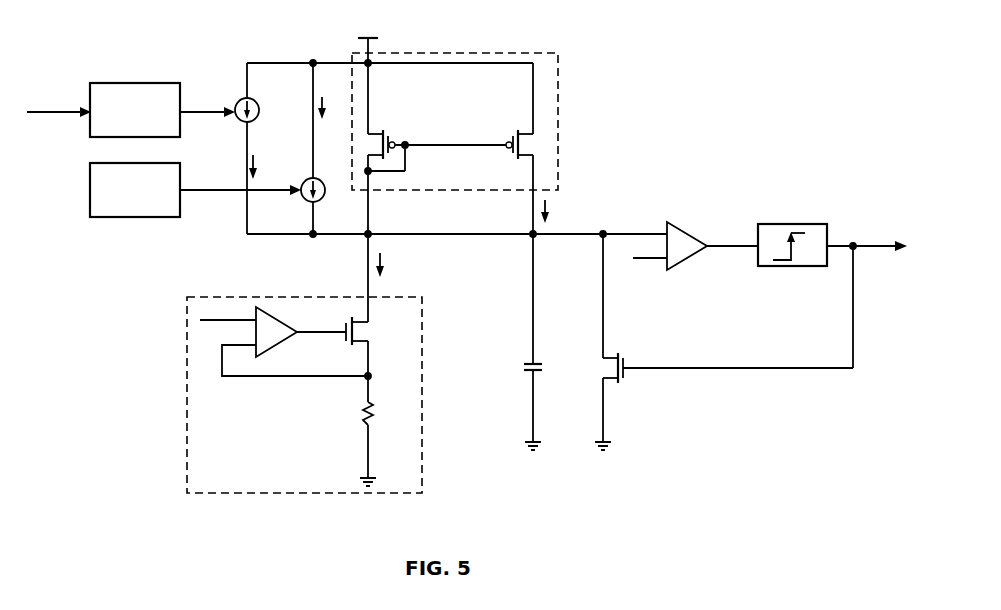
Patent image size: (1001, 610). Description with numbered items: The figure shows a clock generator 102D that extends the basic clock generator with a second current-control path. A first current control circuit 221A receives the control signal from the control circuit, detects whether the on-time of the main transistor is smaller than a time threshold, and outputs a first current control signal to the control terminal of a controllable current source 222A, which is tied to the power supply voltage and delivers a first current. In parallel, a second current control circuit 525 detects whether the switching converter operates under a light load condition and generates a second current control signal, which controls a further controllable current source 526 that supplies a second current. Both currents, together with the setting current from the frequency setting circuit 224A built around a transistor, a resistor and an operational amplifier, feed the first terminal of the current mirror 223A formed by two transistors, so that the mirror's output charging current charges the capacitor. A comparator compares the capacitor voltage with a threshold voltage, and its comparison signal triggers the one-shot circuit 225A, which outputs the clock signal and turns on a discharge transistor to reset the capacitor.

The clock generator 102D is at (758, 67).
The first current control circuit 221A is at (107, 138).
The second current control circuit 525 is at (107, 218).
The controllable current source 222A is at (256, 117).
The controllable current source 526 is at (321, 198).
The current mirror 223A is at (557, 88).
The frequency setting circuit 224A is at (212, 491).
The one-shot circuit 225A is at (772, 267).